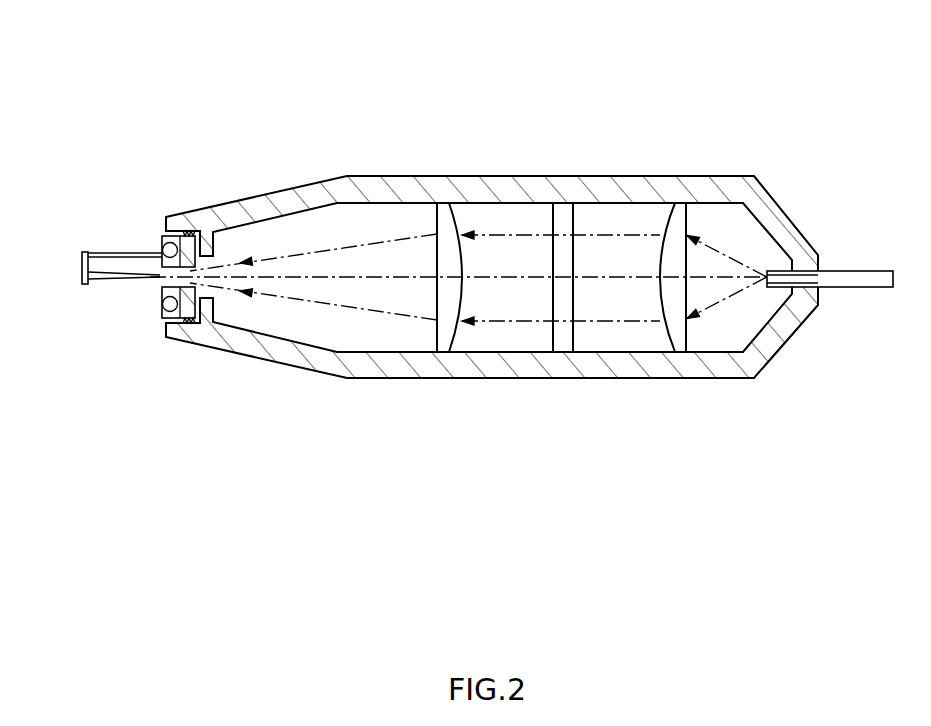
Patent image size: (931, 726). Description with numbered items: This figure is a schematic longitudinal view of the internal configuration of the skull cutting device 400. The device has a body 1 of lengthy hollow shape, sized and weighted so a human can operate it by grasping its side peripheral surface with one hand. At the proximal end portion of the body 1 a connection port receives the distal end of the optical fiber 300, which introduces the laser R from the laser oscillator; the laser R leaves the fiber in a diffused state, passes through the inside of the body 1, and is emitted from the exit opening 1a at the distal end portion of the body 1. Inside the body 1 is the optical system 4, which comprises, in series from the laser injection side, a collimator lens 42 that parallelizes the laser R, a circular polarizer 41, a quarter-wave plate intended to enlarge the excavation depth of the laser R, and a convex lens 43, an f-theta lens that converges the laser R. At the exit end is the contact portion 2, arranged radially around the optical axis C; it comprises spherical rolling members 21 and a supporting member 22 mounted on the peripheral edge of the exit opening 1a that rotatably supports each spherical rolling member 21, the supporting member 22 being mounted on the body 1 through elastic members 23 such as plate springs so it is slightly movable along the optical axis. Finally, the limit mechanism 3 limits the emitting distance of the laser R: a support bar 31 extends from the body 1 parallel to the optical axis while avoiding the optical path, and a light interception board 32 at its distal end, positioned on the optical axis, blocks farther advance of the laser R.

The skull cutting device 400 is at (363, 132).
The body 1 is at (515, 378).
The exit opening 1a is at (157, 284).
The contact portion 2 is at (187, 228).
The spherical rolling member 21 is at (165, 320).
The supporting member 22 is at (168, 235).
The elastic member 23 is at (190, 337).
The limit mechanism 3 is at (117, 165).
The support bar 31 is at (112, 253).
The light interception board 32 is at (82, 262).
The optical system 4 is at (647, 107).
The circular polarizer 41 is at (568, 202).
The collimator lens 42 is at (683, 202).
The convex lens 43 is at (445, 202).
The optical fiber 300 is at (847, 271).